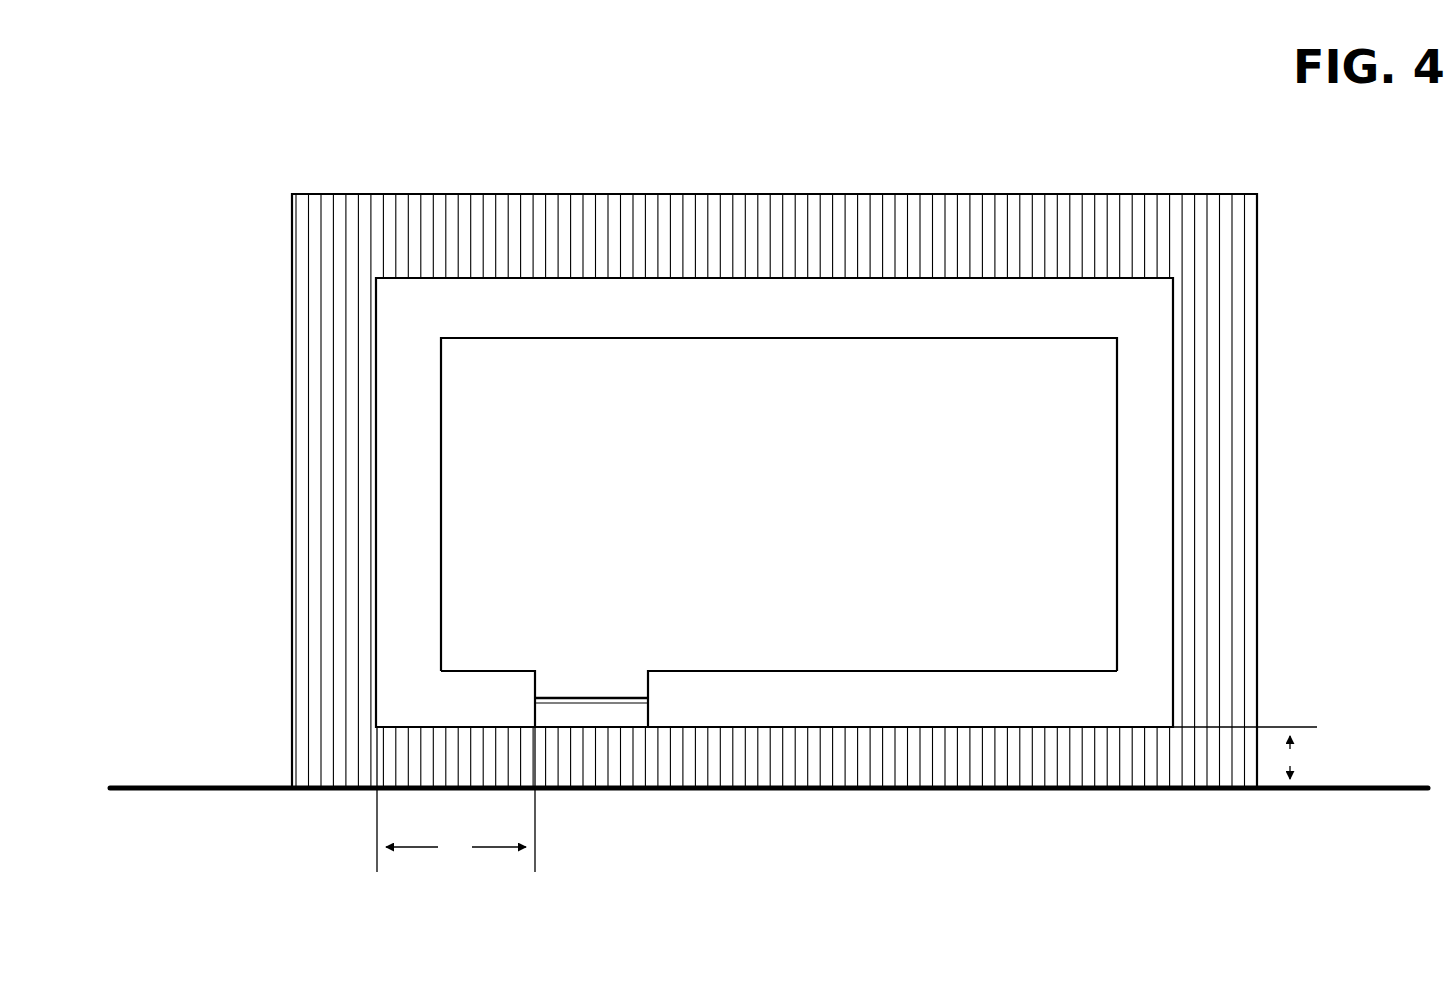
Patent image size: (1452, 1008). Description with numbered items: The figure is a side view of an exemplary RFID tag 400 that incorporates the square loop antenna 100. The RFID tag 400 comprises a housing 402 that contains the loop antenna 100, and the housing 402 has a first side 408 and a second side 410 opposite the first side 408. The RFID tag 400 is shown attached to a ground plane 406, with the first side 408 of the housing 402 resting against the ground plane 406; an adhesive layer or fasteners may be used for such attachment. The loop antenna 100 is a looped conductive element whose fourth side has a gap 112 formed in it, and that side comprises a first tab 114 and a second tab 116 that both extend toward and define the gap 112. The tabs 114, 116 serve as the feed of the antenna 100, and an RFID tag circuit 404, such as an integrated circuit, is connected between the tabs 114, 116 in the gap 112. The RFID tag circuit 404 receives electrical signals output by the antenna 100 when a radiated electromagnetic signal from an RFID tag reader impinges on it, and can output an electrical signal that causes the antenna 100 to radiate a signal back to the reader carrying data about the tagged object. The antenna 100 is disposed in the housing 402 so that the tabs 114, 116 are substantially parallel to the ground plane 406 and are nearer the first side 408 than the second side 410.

The RFID tag 400 is at (260, 125).
The housing 402 is at (1258, 245).
The second side 410 is at (760, 186).
The first side 408 is at (772, 797).
The ground plane 406 is at (206, 786).
The loop antenna 100 is at (898, 277).
The gap 112 is at (599, 636).
The first tab 114 is at (518, 671).
The second tab 116 is at (658, 671).
The RFID tag circuit 404 is at (610, 697).